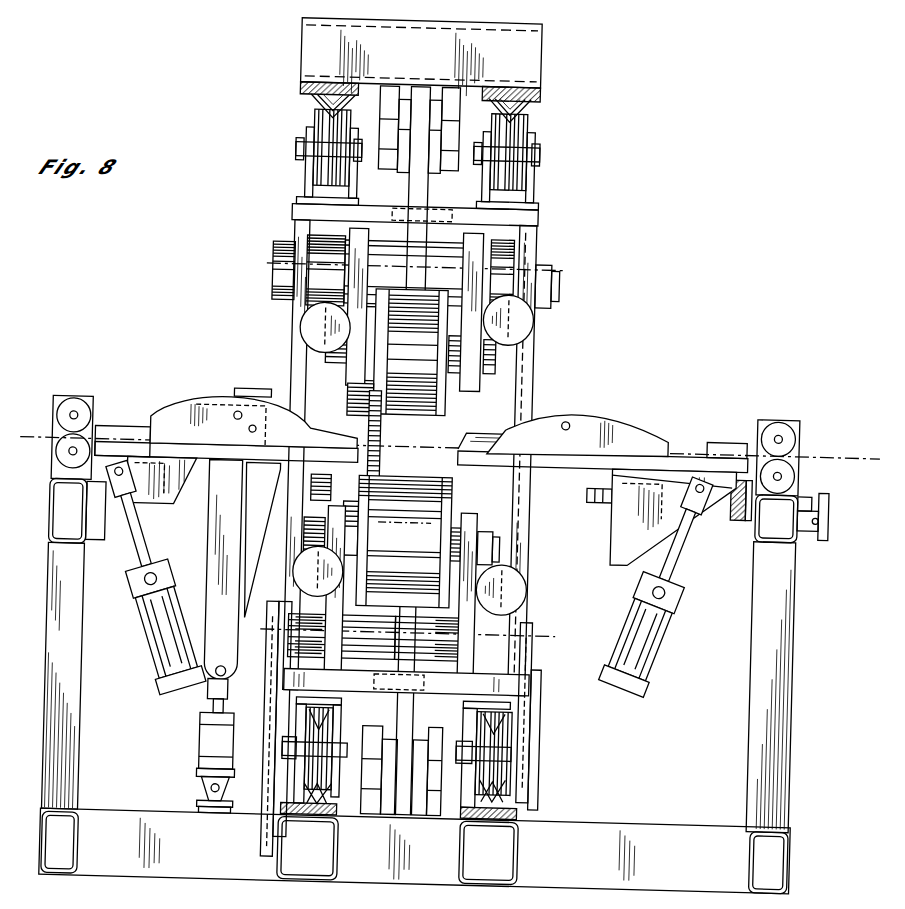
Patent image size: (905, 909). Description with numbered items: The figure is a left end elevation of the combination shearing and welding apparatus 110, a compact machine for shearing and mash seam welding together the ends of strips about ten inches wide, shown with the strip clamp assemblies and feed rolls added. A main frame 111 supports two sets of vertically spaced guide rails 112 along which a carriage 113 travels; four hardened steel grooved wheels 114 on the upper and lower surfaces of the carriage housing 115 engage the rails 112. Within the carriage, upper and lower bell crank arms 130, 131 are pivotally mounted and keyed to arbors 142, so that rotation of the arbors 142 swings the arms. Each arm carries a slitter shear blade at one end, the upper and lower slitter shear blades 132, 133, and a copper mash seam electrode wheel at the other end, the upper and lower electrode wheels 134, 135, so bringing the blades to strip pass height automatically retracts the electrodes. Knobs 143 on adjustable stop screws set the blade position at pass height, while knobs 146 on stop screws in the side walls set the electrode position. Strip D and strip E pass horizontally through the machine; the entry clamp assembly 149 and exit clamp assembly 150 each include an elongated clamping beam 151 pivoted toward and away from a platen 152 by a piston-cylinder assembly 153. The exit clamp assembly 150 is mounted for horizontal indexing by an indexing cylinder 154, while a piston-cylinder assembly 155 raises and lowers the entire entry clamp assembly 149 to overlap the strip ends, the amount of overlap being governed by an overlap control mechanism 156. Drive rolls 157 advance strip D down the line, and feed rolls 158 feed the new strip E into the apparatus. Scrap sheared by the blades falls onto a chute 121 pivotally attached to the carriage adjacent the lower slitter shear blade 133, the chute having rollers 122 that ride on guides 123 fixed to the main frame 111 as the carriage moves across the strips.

The combination shearing and welding apparatus 110 is at (237, 326).
The main frame 111 is at (772, 696).
The guide rails 112 is at (518, 107).
The carriage 113 is at (528, 358).
The grooved wheels 114 is at (322, 110).
The carriage housing 115 is at (517, 372).
The chute 121 is at (526, 686).
The rollers 122 is at (537, 797).
The guides 123 is at (536, 771).
The upper bell crank arm 130 is at (372, 228).
The lower bell crank arm 131 is at (478, 524).
The upper slitter shear blade 132 is at (442, 382).
The lower slitter shear blade 133 is at (365, 493).
The upper copper mash seam electrode wheel 134 is at (352, 420).
The lower copper mash seam electrode wheel 135 is at (383, 453).
The arbors 142 is at (272, 268).
The knobs 143 is at (531, 322).
The knobs 146 is at (300, 328).
The entry clamp assembly 149 is at (192, 402).
The exit clamp assembly 150 is at (609, 409).
The clamping beam 151 is at (541, 466).
The platen 152 is at (470, 466).
The piston-cylinder assembly 153 is at (148, 648).
The indexing cylinder 154 is at (606, 508).
The piston-cylinder assembly 155 is at (204, 759).
The overlap control mechanism 156 is at (808, 556).
The drive rolls 157 is at (783, 413).
The feed rolls 158 is at (68, 400).
The strip E is at (126, 430).
The strip D is at (690, 440).